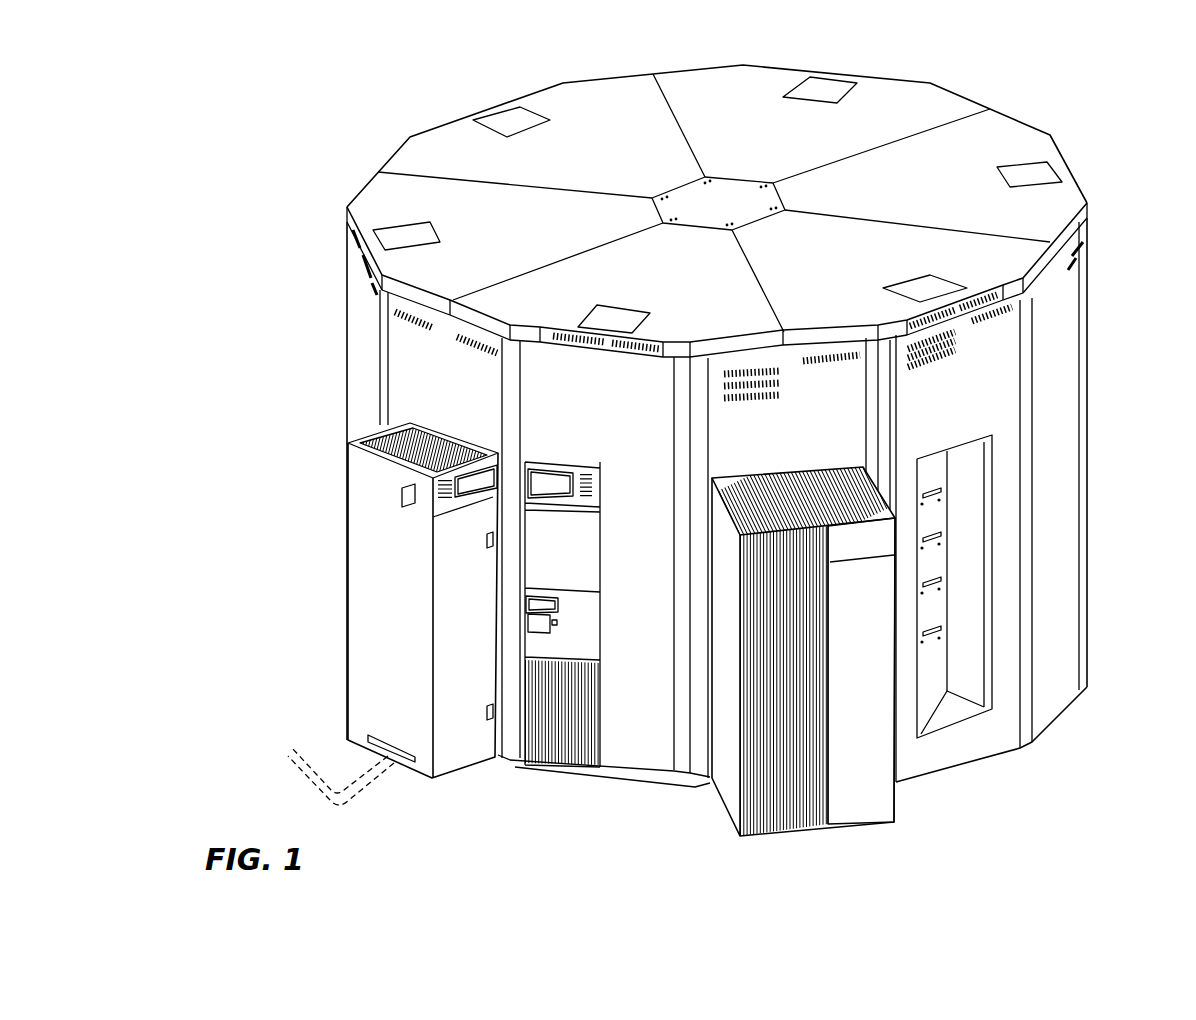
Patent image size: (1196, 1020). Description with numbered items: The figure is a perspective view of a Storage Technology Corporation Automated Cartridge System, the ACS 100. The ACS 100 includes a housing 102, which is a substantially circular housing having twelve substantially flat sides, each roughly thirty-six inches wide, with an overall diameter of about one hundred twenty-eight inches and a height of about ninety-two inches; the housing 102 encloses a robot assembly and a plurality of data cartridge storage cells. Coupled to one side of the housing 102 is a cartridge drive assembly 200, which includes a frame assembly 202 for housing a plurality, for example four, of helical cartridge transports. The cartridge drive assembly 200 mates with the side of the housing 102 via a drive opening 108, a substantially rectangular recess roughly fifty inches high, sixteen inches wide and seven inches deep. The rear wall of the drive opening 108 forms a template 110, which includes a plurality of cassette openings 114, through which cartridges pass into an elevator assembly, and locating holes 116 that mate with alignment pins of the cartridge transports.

The Automated Cartridge System 100 is at (350, 95).
The housing 102 is at (897, 80).
The drive opening 108 is at (961, 496).
The template 110 is at (937, 559).
The cassette opening 114 is at (941, 577).
The locating hole 116 is at (941, 587).
The cartridge drive assembly 200 is at (711, 805).
The frame assembly 202 is at (853, 803).